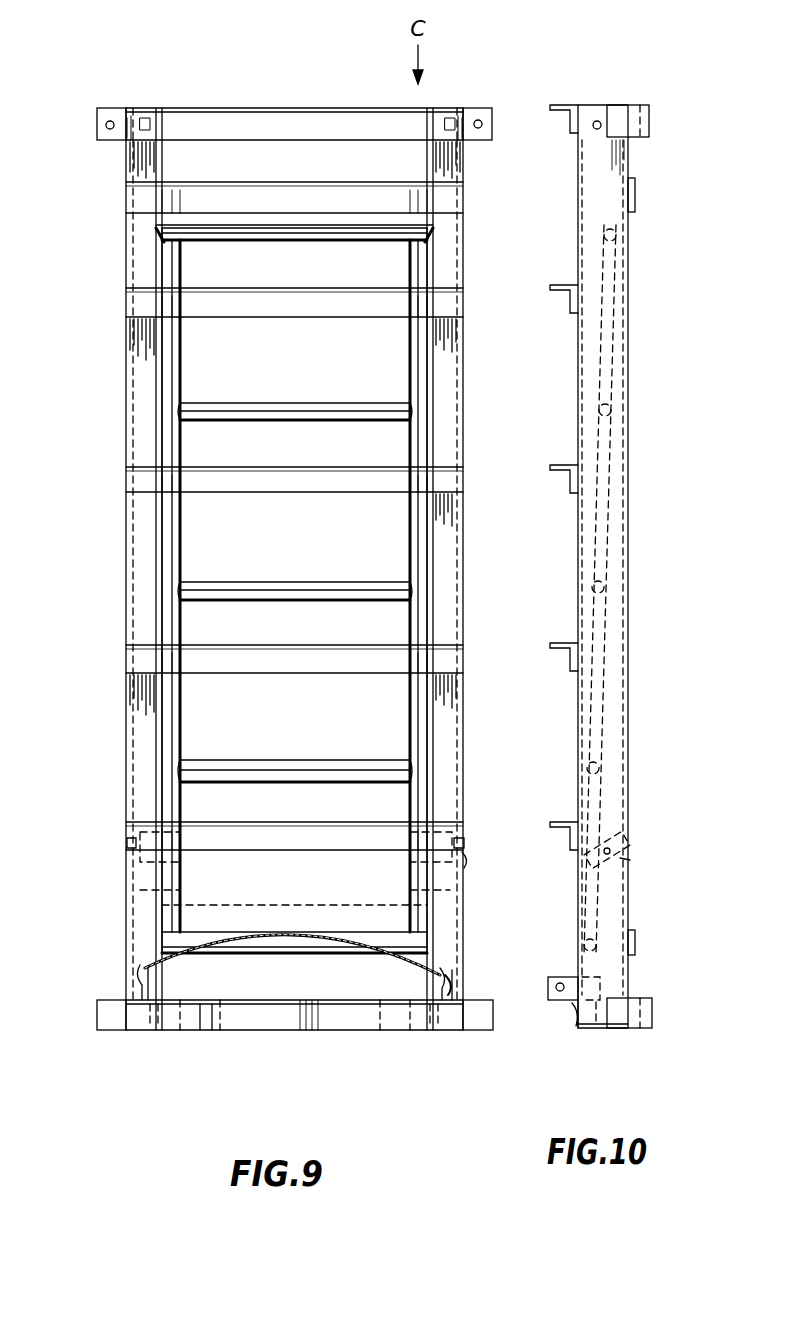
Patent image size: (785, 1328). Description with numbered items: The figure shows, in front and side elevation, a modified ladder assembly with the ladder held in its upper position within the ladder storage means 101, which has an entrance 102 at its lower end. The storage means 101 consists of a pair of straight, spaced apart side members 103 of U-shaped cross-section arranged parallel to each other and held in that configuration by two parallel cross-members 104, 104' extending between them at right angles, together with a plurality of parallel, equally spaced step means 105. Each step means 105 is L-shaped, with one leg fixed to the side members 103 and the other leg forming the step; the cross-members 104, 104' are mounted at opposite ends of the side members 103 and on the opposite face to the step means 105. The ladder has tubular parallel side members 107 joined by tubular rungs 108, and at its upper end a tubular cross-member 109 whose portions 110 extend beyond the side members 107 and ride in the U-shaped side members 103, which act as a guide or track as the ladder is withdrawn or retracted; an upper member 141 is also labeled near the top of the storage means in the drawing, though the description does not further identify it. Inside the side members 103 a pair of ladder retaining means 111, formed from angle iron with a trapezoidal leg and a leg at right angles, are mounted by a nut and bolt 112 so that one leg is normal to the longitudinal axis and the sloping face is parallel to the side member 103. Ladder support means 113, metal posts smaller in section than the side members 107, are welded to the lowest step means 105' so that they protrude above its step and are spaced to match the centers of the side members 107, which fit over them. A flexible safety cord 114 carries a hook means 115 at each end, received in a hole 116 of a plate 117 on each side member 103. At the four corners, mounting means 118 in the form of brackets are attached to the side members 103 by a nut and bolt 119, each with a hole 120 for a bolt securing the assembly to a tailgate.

In FIG. 9, the ladder storage means 101 is at (100, 209).
In FIG. 10, the ladder storage means 101 is at (652, 164).
In FIG. 9, the entrance 102 is at (294, 1046).
In FIG. 10, the entrance 102 is at (610, 1046).
In FIG. 9, the side members 103 is at (126, 350).
In FIG. 9, the cross-member 104 is at (327, 590).
In FIG. 10, the cross-member 104 is at (664, 931).
In FIG. 10, the cross-member 104' is at (670, 195).
In FIG. 10, the step means 105 is at (542, 488).
In FIG. 9, the lowest step means 105' is at (188, 1039).
In FIG. 10, the lowest step means 105' is at (547, 1036).
In FIG. 9, the side members of ladder 107 is at (162, 519).
In FIG. 9, the rungs 108 is at (305, 410).
In FIG. 9, the tubular cross-member 109 is at (315, 233).
In FIG. 9, the portions 110 is at (140, 238).
In FIG. 9, the ladder retaining means 111 is at (128, 843).
In FIG. 10, the ladder retaining means 111 is at (625, 862).
In FIG. 9, the nut and bolt 112 is at (466, 858).
In FIG. 10, the nut and bolt 112 is at (620, 852).
In FIG. 9, the ladder support means 113 is at (155, 1032).
In FIG. 10, the ladder support means 113 is at (598, 1032).
In FIG. 9, the flexible safety cord 114 is at (295, 932).
In FIG. 9, the hook means 115 is at (450, 985).
In FIG. 10, the hole 116 is at (560, 983).
In FIG. 9, the plate 117 is at (133, 995).
In FIG. 10, the plate 117 is at (575, 1004).
In FIG. 9, the mounting means 118 is at (108, 107).
In FIG. 10, the mounting means 118 is at (638, 1030).
In FIG. 9, the nut and bolt 119 is at (127, 143).
In FIG. 9, the hole 120 is at (106, 125).
In FIG. 9, the top cross member 141 is at (415, 200).